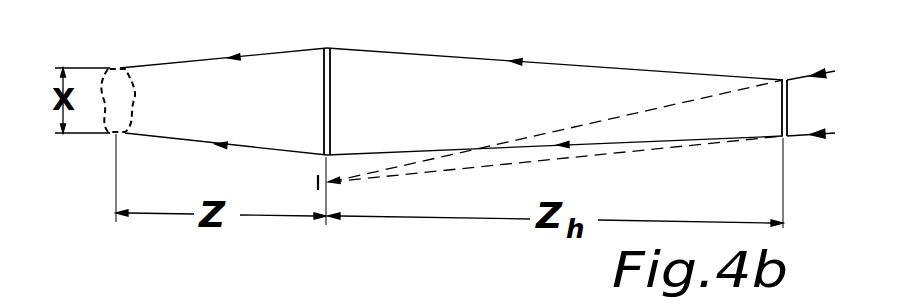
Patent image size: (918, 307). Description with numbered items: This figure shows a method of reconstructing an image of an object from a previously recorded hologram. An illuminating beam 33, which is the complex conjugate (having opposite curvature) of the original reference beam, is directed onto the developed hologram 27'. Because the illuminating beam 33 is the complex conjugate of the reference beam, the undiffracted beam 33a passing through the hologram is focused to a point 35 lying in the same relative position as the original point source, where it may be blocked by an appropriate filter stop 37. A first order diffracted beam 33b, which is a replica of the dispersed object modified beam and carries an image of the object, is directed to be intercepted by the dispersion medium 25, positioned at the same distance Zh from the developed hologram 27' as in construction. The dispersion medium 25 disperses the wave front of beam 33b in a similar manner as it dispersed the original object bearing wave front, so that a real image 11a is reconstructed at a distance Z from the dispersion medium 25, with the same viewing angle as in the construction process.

The real image 11a is at (120, 70).
The dispersion medium 25 is at (328, 48).
The first order diffracted beam 33b is at (550, 63).
The developed hologram 27' is at (556, 101).
The illuminating beam 33 is at (828, 70).
The undiffracted beam 33a is at (622, 154).
The point 35 is at (328, 184).
The filter stop 37 is at (317, 182).